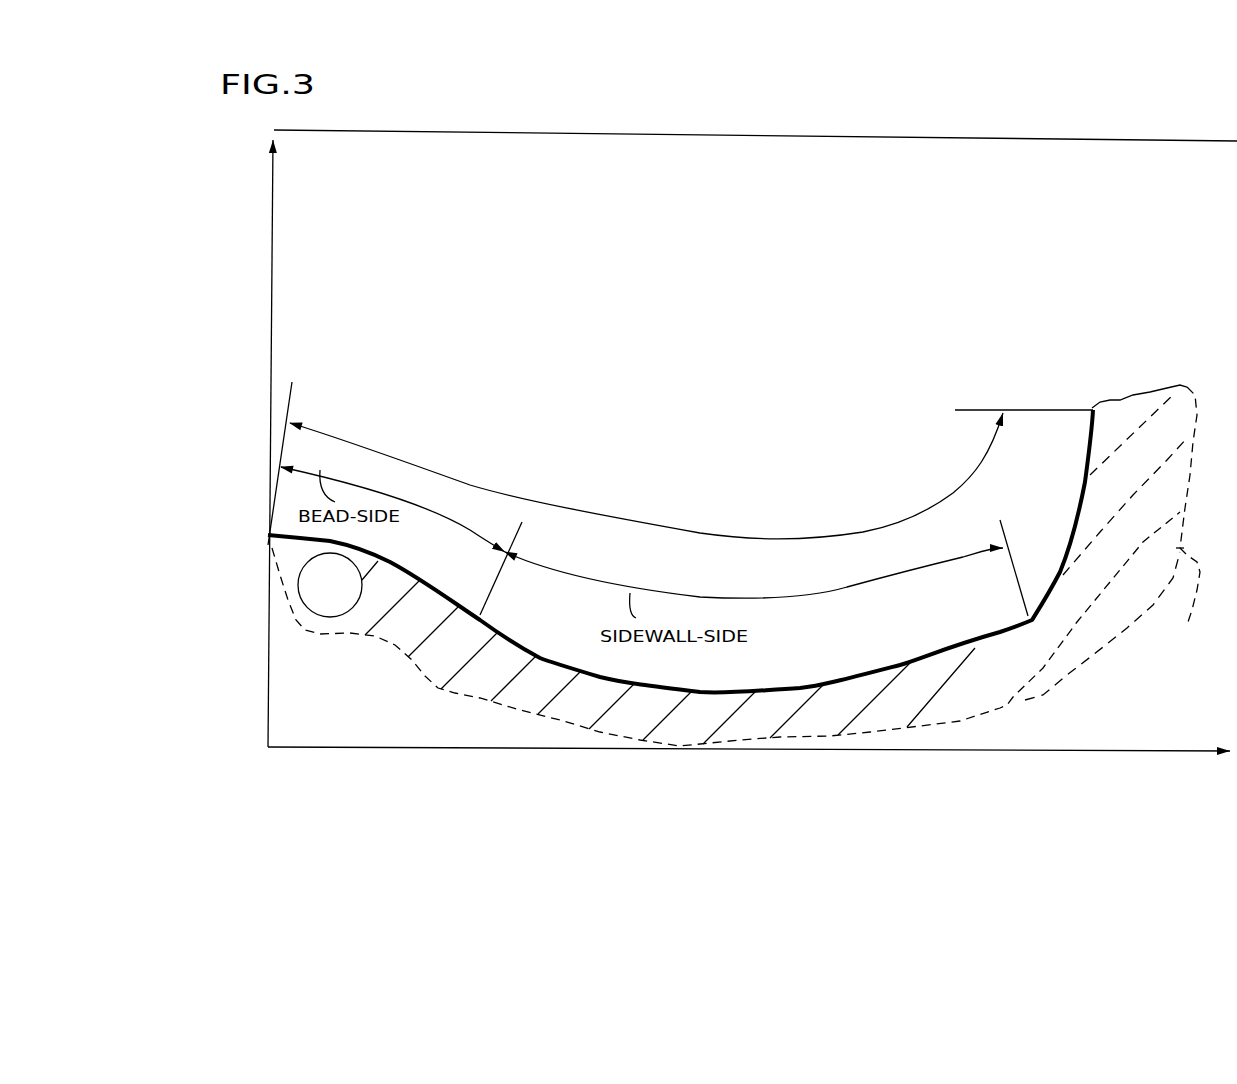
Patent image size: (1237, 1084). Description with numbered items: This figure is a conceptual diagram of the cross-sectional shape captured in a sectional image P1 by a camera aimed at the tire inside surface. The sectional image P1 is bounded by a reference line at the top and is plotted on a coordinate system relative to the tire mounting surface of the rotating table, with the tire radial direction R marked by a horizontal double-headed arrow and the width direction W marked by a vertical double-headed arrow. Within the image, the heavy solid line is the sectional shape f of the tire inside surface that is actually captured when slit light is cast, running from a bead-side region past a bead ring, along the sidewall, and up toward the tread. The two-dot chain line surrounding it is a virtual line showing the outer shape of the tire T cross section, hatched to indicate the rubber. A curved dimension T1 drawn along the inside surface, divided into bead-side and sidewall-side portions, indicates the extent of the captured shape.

The sectional image P1 is at (633, 134).
The sidewall thickness T1 is at (548, 502).
The sectional shape f is at (868, 668).
The tire T is at (1188, 606).
The radial direction R is at (866, 795).
The width direction W is at (227, 313).